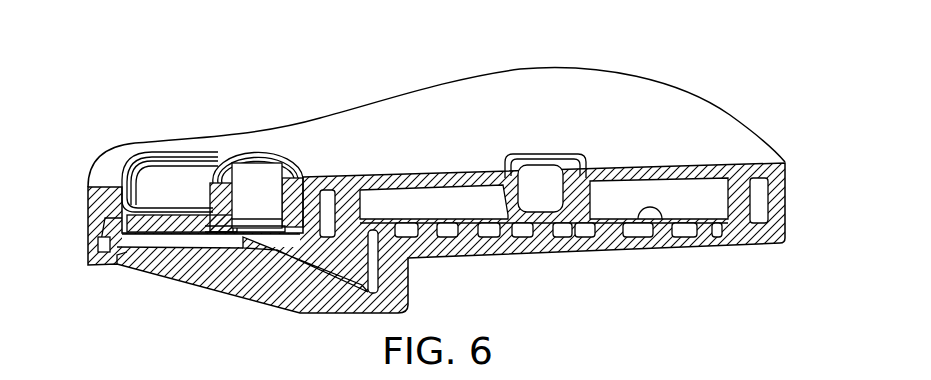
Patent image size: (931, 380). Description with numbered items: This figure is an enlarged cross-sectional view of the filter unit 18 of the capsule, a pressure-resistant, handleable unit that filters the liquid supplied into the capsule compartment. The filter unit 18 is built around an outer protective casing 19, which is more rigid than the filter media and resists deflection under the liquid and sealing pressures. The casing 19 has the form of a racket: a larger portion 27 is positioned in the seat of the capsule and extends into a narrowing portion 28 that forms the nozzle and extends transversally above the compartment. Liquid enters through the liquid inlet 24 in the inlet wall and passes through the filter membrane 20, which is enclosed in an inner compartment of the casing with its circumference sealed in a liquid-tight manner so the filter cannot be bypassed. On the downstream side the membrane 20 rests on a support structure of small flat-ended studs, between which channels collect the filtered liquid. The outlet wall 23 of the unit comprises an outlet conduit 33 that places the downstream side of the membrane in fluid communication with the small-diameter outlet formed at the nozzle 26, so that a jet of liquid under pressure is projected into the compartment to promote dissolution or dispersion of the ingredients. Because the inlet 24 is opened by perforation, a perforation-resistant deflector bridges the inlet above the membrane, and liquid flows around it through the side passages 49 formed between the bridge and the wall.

The filter unit 18 is at (80, 187).
The outer protective casing 19 is at (782, 160).
The filter membrane 20 is at (660, 208).
The outlet wall 23 is at (575, 247).
The liquid inlet 24 is at (552, 182).
The nozzle 26 is at (123, 267).
The larger portion 27 is at (542, 105).
The narrowing portion 28 is at (262, 127).
The outlet conduit 33 is at (318, 270).
The side passages 49 is at (522, 157).